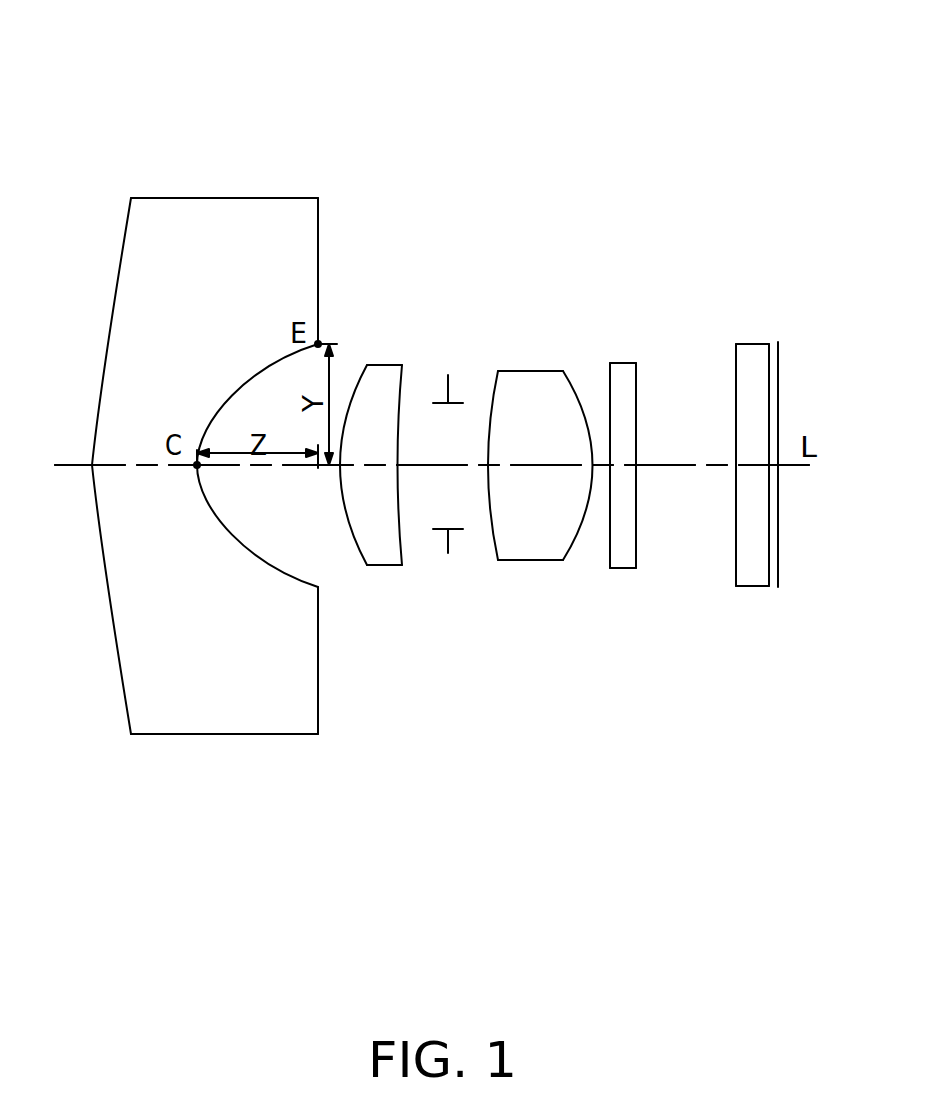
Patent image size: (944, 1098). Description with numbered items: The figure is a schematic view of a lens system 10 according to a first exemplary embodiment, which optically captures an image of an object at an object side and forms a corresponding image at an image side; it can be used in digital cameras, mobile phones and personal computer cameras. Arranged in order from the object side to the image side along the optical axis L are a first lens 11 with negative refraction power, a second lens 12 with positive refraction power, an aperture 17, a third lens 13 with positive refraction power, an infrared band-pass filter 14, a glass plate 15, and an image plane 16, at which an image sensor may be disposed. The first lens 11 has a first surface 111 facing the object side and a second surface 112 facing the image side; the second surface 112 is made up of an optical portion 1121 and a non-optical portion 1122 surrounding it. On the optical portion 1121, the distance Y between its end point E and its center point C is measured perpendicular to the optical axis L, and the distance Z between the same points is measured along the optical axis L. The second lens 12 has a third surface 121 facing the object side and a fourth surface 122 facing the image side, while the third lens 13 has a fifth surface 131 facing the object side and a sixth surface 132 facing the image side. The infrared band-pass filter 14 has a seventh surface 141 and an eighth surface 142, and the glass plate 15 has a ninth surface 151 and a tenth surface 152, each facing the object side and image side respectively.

The lens system 10 is at (423, 71).
The first lens 11 is at (201, 223).
The first surface 111 is at (119, 274).
The second surface 112 is at (418, 733).
The optical portion 1121 is at (273, 562).
The non-optical portion 1122 is at (320, 678).
The second lens 12 is at (380, 390).
The third surface 121 is at (355, 543).
The fourth surface 122 is at (400, 413).
The third lens 13 is at (533, 393).
The fifth surface 131 is at (490, 533).
The sixth surface 132 is at (578, 540).
The infrared band-pass filter 14 is at (620, 373).
The seventh surface 141 is at (608, 550).
The eighth surface 142 is at (637, 392).
The glass plate 15 is at (752, 352).
The ninth surface 151 is at (735, 416).
The tenth surface 152 is at (770, 575).
The image plane 16 is at (780, 353).
The aperture 17 is at (447, 553).